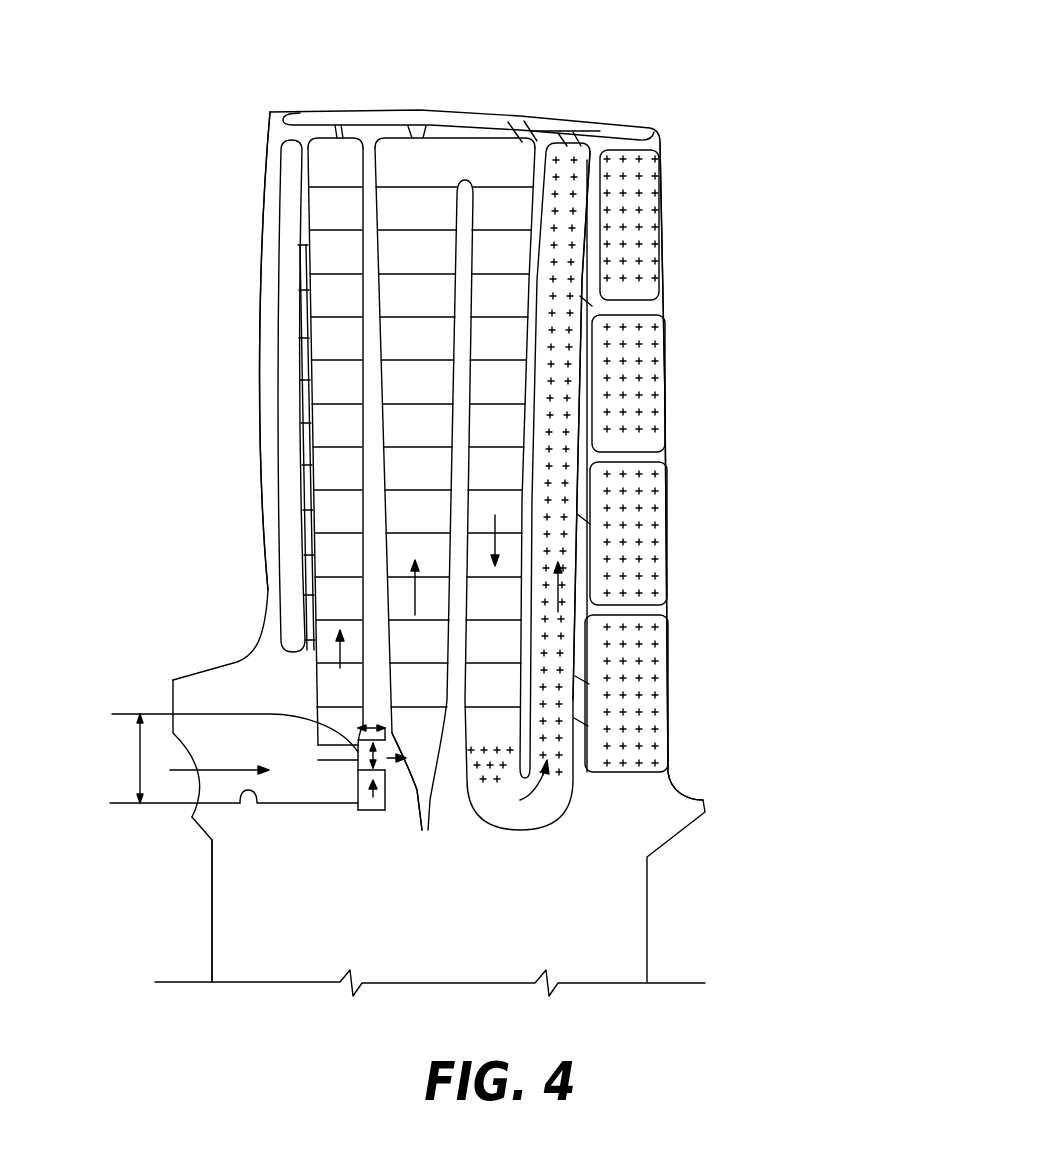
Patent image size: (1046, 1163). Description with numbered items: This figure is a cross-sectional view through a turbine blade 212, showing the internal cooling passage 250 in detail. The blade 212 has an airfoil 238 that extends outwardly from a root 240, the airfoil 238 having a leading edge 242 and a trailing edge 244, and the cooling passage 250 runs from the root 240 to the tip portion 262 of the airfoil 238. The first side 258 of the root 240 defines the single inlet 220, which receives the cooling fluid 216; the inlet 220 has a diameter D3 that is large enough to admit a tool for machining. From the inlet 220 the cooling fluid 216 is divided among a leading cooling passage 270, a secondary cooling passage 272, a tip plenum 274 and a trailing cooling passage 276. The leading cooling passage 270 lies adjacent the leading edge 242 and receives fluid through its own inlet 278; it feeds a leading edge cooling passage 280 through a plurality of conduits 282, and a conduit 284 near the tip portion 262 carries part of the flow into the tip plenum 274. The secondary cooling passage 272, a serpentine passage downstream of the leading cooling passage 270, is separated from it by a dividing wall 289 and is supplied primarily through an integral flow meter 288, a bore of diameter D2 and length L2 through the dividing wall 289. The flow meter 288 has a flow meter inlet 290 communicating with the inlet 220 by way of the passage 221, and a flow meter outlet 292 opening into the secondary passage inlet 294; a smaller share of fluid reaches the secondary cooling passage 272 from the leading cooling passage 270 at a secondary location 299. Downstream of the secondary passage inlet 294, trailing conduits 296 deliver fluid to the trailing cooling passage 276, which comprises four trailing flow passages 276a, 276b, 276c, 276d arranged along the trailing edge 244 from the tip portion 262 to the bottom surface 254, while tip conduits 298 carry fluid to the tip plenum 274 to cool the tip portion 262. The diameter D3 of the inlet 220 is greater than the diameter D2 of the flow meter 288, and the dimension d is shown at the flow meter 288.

The blade 212 is at (752, 160).
The cooling fluid 216 is at (302, 650).
The inlet 220 is at (195, 808).
The passage 221 is at (253, 806).
The airfoil 238 is at (740, 318).
The root 240 is at (702, 883).
The leading edge 242 is at (260, 380).
The trailing edge 244 is at (668, 430).
The cooling passage 250 is at (495, 848).
The bottom surface 254 is at (672, 780).
The first side 258 is at (207, 892).
The tip portion 262 is at (455, 108).
The leading cooling passage 270 is at (322, 590).
The secondary cooling passage 272 is at (552, 125).
The tip plenum 274 is at (560, 127).
The trailing cooling passage 276 is at (744, 388).
The trailing flow passage 276a is at (655, 212).
The trailing flow passage 276b is at (655, 355).
The trailing flow passage 276c is at (660, 510).
The trailing flow passage 276d is at (660, 652).
The inlet 278 is at (245, 663).
The leading edge cooling passage 280 is at (283, 183).
The conduits 282 is at (298, 250).
The conduit 284 is at (345, 118).
The flow meter 288 is at (380, 800).
The dividing wall 289 is at (368, 460).
The flow meter inlet 290 is at (345, 745).
The flow meter outlet 292 is at (392, 735).
The secondary passage inlet 294 is at (402, 762).
The trailing conduits 296 is at (592, 230).
The tip conduits 298 is at (412, 126).
The secondary location 299 is at (368, 203).
The length L2 is at (360, 727).
The opening height d is at (369, 755).
The diameter D2 is at (372, 812).
The diameter D3 is at (113, 758).